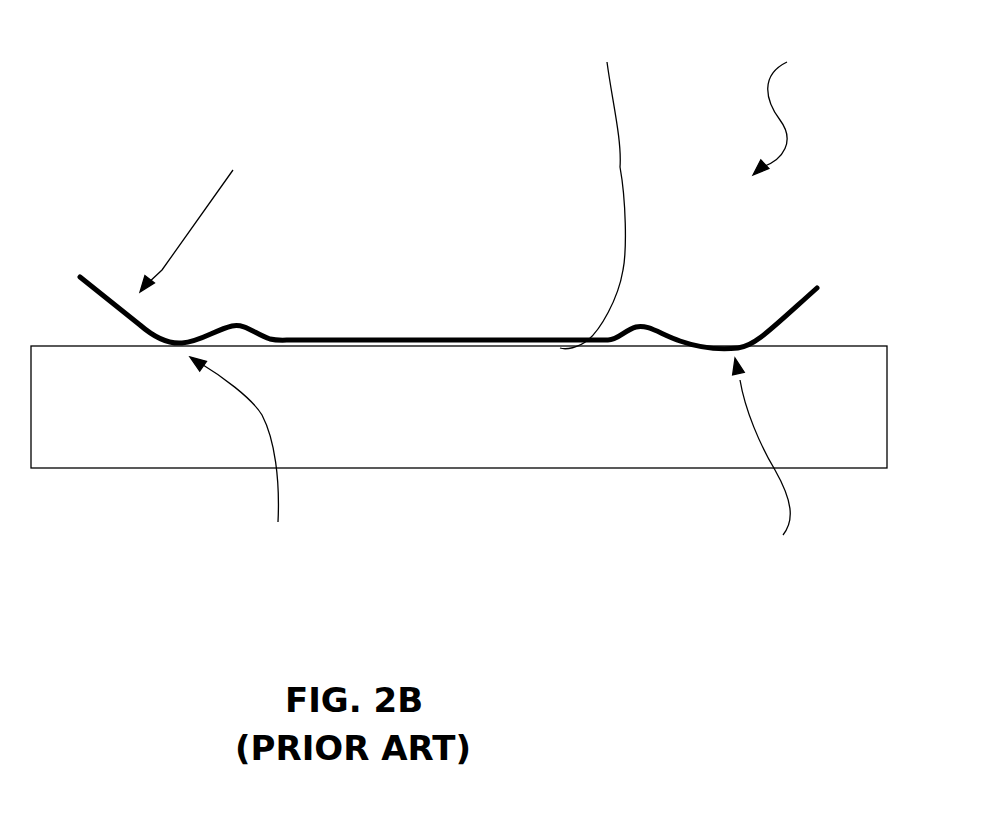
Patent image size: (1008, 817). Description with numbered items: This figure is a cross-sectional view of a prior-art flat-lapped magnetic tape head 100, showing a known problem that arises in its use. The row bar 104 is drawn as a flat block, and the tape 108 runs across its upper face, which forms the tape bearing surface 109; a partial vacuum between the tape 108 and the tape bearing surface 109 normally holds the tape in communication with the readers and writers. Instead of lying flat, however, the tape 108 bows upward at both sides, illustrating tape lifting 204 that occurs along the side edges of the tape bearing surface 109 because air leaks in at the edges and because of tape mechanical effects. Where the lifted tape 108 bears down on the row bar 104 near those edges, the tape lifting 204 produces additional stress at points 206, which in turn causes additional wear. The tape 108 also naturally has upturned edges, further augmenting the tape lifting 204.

The magnetic tape head 100 is at (783, 99).
The row bar 104 is at (398, 350).
The tape 108 is at (127, 322).
The tape bearing surface 109 is at (592, 188).
The tape lifting 204 is at (194, 214).
The points 206 is at (490, 464).